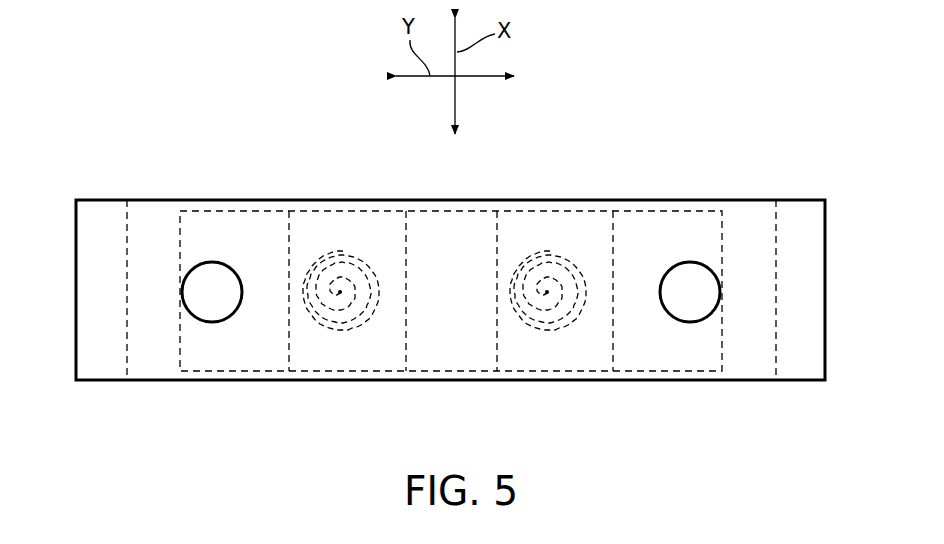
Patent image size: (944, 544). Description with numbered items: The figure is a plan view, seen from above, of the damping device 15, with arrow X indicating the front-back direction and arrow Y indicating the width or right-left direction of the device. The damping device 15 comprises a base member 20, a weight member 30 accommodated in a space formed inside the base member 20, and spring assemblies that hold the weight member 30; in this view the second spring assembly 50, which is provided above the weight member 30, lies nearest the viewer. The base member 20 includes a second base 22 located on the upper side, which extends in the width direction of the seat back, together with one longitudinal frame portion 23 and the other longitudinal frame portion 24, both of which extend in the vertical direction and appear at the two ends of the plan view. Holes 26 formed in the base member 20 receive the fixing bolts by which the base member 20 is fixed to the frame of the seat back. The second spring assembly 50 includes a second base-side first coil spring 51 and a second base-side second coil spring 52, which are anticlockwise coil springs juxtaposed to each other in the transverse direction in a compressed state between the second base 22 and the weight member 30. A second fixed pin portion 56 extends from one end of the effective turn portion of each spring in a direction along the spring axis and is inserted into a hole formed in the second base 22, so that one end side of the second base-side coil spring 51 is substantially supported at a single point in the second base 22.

The damping device 15 is at (646, 74).
The base member 20 is at (806, 196).
The second base 22 is at (451, 355).
The one longitudinal frame portion 23 is at (76, 290).
The other longitudinal frame portion 24 is at (825, 290).
The holes 26 is at (241, 287).
The weight member 30 is at (452, 228).
The second spring assembly 50 is at (318, 335).
The second base-side first coil spring 51 is at (308, 271).
The second base-side second coil spring 52 is at (592, 274).
The second fixed pin portion 56 is at (343, 290).